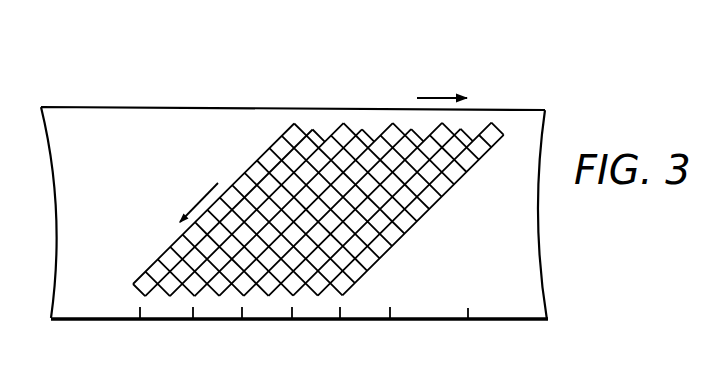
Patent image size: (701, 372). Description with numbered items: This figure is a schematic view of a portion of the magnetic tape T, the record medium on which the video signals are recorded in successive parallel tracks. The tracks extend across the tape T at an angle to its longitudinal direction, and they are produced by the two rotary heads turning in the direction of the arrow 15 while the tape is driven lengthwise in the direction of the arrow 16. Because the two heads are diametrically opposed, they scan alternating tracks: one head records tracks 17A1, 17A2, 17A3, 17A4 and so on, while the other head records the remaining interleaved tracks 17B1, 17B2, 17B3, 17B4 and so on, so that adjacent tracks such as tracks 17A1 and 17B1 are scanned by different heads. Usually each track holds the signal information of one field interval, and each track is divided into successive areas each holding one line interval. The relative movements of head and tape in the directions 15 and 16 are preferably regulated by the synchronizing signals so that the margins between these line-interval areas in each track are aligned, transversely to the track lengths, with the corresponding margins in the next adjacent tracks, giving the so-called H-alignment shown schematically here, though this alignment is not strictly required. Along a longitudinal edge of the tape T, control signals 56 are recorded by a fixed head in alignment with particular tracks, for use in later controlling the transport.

The arrow indicating direction of head rotation 15 is at (197, 199).
The arrow indicating longitudinal tape direction 16 is at (446, 96).
The track 17A1 is at (504, 134).
The track 17A2 is at (444, 126).
The track 17A3 is at (396, 127).
The track 17A4 is at (349, 129).
The track 17B1 is at (462, 129).
The track 17B2 is at (412, 128).
The track 17B3 is at (363, 128).
The track 17B4 is at (313, 128).
The control signals 56 is at (148, 320).
The magnetic tape T is at (468, 320).